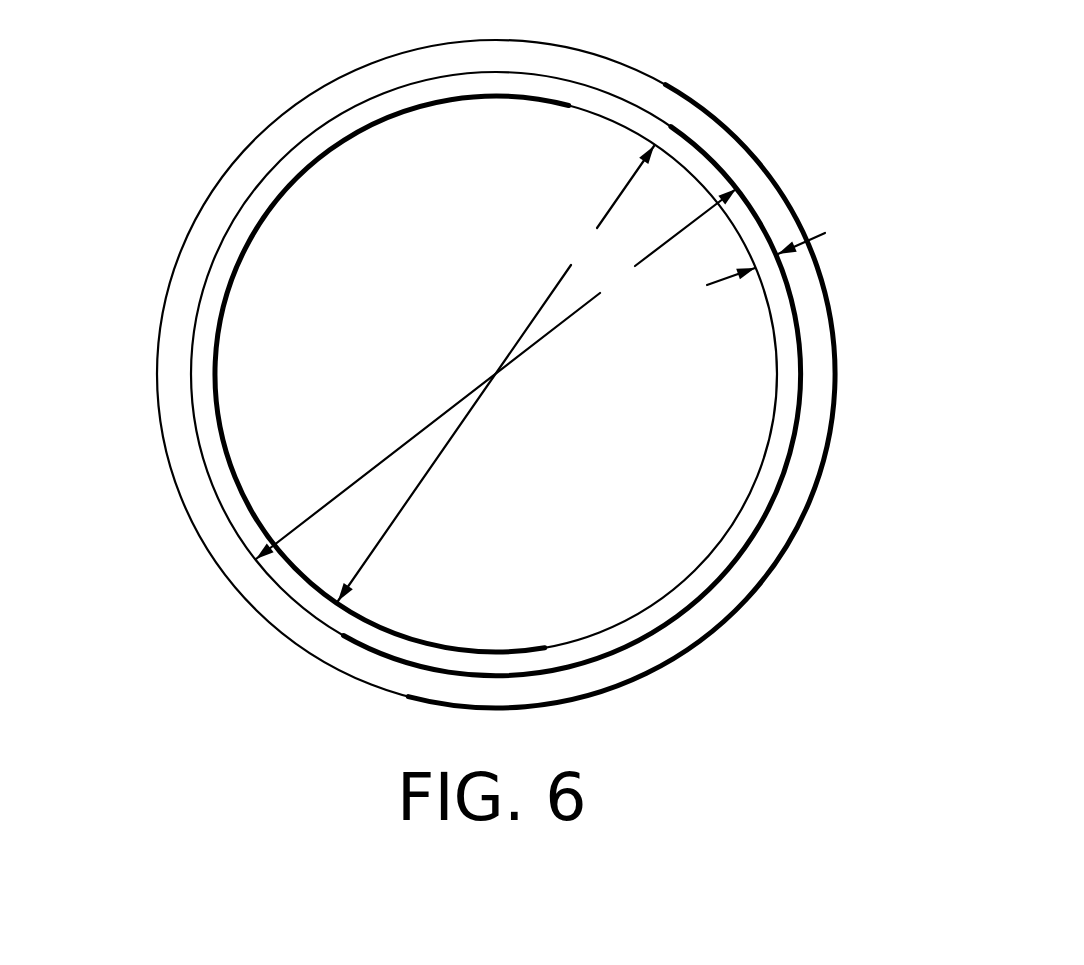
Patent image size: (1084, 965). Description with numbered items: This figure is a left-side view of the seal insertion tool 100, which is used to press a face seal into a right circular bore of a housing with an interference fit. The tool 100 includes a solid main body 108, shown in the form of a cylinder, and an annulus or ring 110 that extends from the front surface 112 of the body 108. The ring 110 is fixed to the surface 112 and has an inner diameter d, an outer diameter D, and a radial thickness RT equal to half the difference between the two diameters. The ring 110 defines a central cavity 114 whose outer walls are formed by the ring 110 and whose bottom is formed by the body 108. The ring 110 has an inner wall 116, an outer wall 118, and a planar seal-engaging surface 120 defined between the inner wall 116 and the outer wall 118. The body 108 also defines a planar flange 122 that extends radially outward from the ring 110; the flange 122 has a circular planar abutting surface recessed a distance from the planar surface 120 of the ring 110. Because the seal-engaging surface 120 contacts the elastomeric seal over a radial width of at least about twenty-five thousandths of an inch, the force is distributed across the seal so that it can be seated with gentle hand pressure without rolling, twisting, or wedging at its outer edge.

The tool 100 is at (760, 92).
The main body 108 is at (222, 181).
The ring 110 is at (328, 615).
The front surface 112 is at (618, 442).
The central cavity 114 is at (628, 518).
The inner wall 116 is at (757, 462).
The outer wall 118 is at (597, 660).
The planar seal-engaging surface 120 is at (317, 140).
The planar flange 122 is at (205, 508).